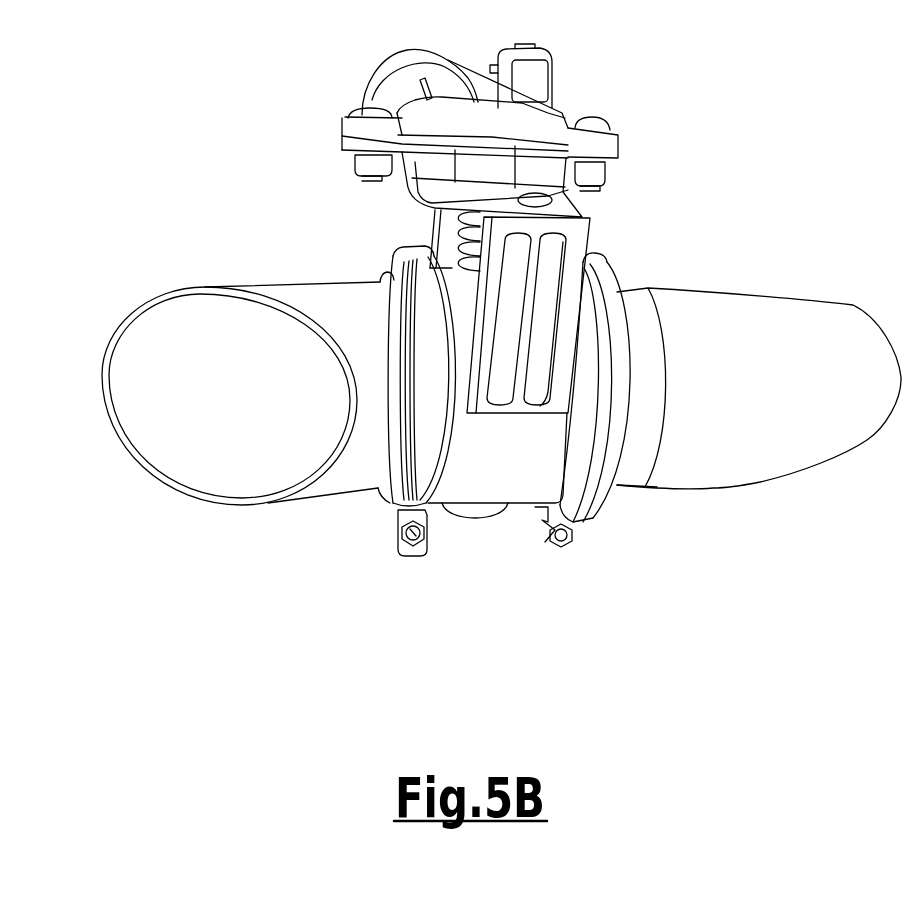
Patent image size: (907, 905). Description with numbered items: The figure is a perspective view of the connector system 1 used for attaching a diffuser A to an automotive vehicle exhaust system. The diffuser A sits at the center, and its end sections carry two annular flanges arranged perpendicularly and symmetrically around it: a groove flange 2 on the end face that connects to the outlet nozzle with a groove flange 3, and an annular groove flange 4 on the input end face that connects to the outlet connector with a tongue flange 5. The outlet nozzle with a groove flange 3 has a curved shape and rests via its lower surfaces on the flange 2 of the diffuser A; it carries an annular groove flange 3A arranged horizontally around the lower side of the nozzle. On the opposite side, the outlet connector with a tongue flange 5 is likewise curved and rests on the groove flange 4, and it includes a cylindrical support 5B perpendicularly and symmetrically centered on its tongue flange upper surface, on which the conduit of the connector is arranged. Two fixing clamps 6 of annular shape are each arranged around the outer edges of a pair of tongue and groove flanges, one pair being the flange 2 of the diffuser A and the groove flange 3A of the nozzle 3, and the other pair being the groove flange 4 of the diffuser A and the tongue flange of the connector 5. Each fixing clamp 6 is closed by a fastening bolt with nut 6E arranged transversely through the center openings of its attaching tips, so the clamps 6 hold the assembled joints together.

The connector system 1 is at (658, 487).
The groove flange 2 is at (432, 470).
The outlet nozzle with a groove flange 3 is at (256, 440).
The annular groove flange 3A is at (380, 505).
The annular groove flange 4 is at (581, 458).
The outlet connector with a tongue flange 5 is at (760, 432).
The cylindrical support 5B is at (634, 470).
The fixing clamp 6 is at (402, 556).
The fastening bolt with nut 6E is at (425, 548).
The diffuser A is at (577, 234).